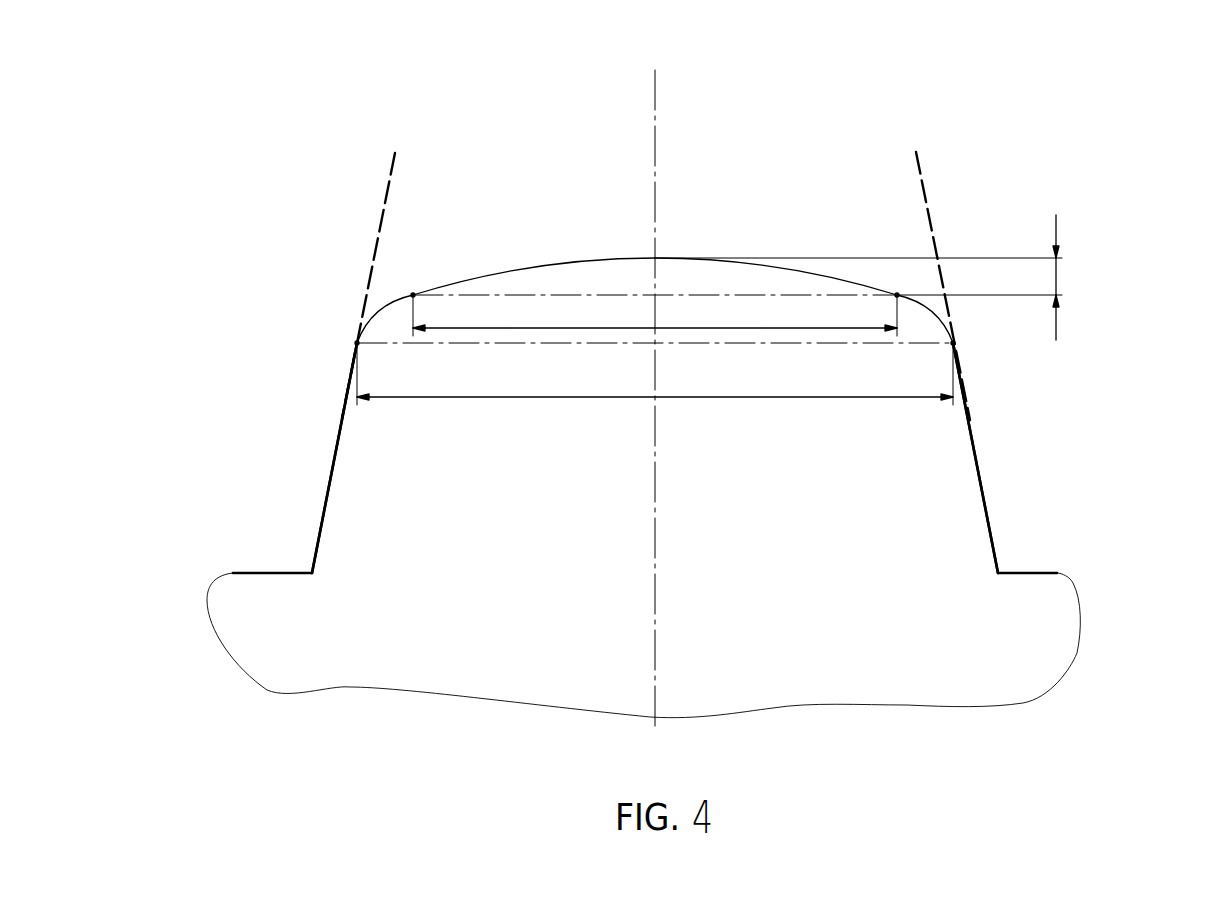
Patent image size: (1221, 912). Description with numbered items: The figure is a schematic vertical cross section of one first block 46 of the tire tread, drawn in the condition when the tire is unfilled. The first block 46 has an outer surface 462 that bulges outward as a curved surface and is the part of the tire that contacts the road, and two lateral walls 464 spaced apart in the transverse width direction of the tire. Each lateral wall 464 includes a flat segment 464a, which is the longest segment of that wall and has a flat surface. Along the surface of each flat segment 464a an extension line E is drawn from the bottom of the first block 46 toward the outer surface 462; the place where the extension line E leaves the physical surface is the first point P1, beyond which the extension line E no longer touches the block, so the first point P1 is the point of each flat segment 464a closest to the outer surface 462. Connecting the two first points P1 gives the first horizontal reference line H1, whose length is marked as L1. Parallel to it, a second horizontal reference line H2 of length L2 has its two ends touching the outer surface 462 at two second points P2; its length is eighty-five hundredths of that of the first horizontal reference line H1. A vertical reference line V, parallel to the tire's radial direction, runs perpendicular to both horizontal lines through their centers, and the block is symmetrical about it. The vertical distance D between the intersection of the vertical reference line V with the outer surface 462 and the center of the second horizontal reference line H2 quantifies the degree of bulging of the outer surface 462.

The first block 46 is at (890, 528).
The lateral wall 464 is at (334, 455).
The flat segment 464a is at (325, 502).
The outer surface 462 is at (502, 270).
The extension line E is at (390, 172).
The vertical reference line V is at (657, 85).
The second horizontal reference line H2 is at (700, 295).
The first horizontal reference line H1 is at (748, 343).
The width between second points L2 is at (557, 328).
The width between first points L1 is at (613, 397).
The vertical distance D is at (869, 277).
The second point P2 is at (413, 295).
The first point P1 is at (357, 342).